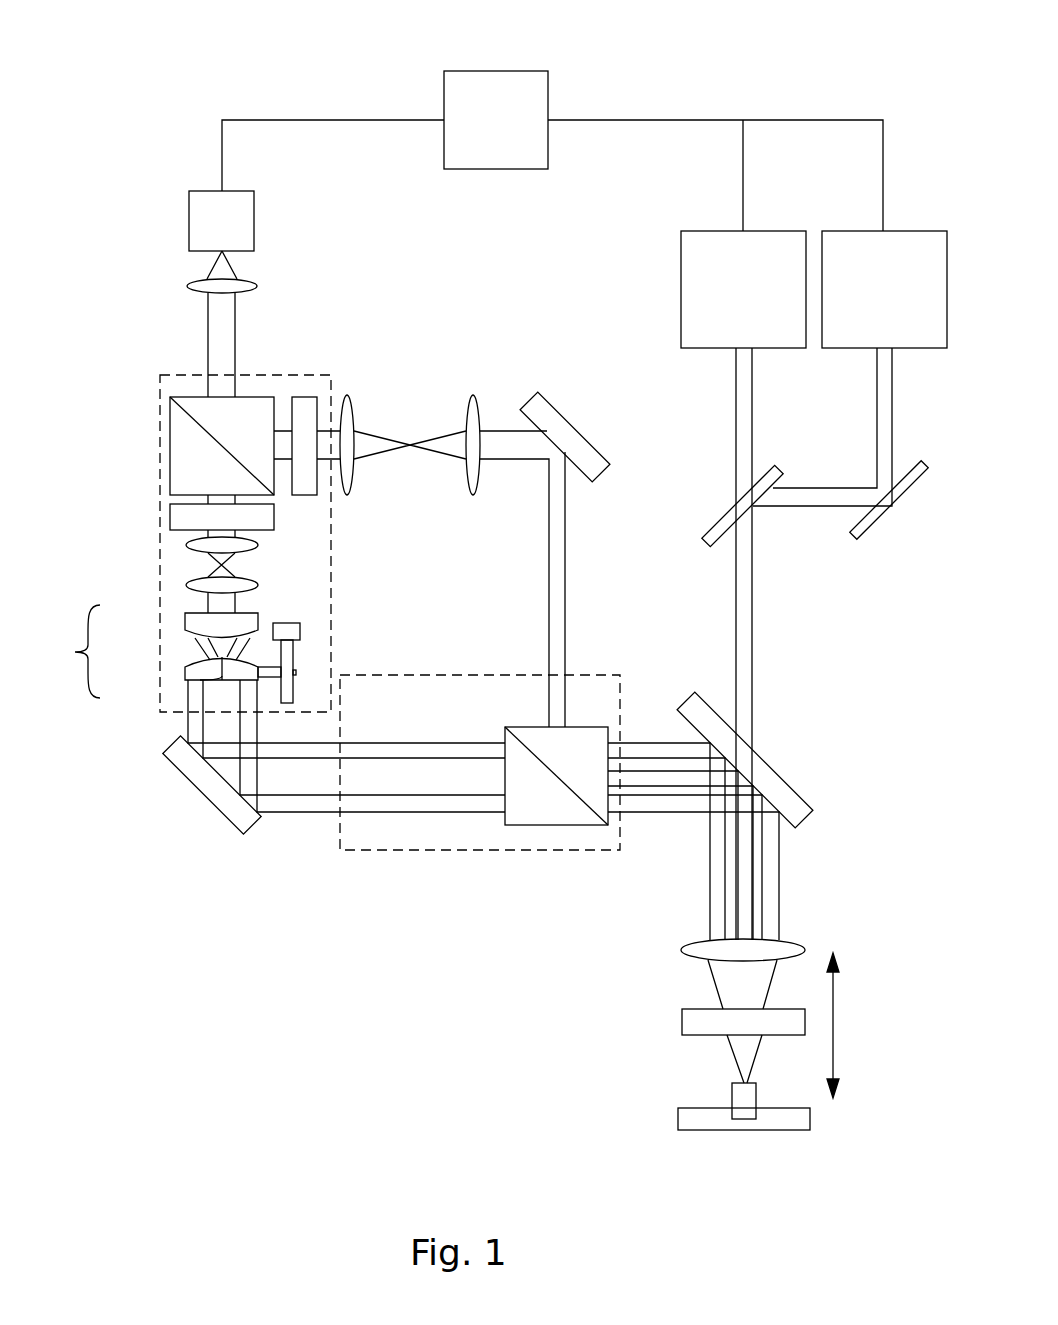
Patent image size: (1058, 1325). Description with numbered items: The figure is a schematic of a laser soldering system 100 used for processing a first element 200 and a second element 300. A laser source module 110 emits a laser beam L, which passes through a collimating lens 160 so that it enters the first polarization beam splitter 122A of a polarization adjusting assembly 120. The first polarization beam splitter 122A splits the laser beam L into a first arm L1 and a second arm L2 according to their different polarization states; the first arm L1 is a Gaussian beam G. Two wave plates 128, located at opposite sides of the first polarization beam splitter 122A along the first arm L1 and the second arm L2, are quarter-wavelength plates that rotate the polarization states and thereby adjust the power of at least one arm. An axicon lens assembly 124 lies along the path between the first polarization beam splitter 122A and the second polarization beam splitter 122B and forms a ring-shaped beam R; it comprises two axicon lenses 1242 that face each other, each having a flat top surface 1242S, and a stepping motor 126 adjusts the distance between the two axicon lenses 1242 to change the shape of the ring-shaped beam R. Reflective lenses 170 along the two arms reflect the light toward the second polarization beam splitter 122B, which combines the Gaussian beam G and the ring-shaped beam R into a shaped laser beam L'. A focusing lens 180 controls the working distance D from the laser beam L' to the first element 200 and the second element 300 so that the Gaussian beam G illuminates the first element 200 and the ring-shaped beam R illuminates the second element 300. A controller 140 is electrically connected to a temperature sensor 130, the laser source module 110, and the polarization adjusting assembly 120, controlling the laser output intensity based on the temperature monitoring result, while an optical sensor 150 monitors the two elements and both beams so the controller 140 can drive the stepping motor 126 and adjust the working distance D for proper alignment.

The laser soldering system 100 is at (117, 27).
The laser source module 110 is at (193, 222).
The polarization adjusting assembly 120 is at (160, 405).
The first polarization beam splitter 122A is at (170, 455).
The second polarization beam splitter 122B is at (537, 817).
The axicon lens assembly 124 is at (64, 651).
The stepping motor 126 is at (300, 632).
The wave plate 128 is at (170, 515).
The temperature sensor 130 is at (850, 240).
The controller 140 is at (495, 78).
The optical sensor 150 is at (708, 240).
The collimating lens 160 is at (190, 286).
The reflective lens 170 is at (545, 400).
The focusing lens 180 is at (693, 942).
The first element 200 is at (745, 1118).
The second element 300 is at (785, 1120).
The axicon lens 1242 is at (185, 622).
The flat top surface 1242S is at (220, 681).
The laser beam L is at (181, 345).
The first arm L1 is at (388, 440).
The second arm L2 is at (236, 602).
The shaped laser beam L' is at (712, 984).
The ring-shaped beam R is at (380, 750).
The Gaussian beam G is at (747, 910).
The working distance D is at (842, 1025).